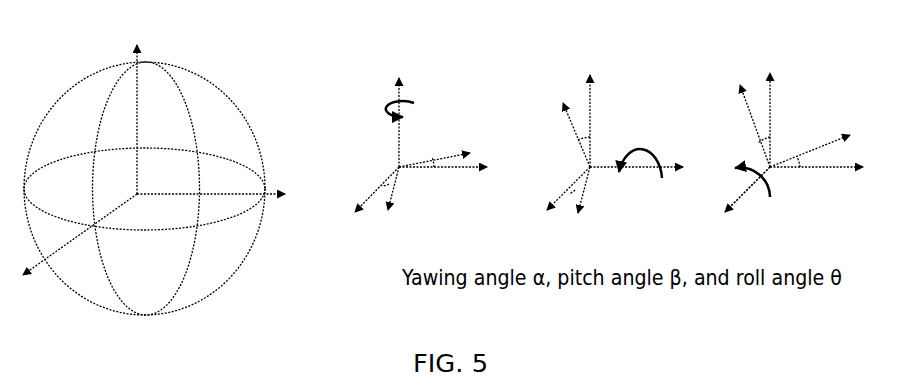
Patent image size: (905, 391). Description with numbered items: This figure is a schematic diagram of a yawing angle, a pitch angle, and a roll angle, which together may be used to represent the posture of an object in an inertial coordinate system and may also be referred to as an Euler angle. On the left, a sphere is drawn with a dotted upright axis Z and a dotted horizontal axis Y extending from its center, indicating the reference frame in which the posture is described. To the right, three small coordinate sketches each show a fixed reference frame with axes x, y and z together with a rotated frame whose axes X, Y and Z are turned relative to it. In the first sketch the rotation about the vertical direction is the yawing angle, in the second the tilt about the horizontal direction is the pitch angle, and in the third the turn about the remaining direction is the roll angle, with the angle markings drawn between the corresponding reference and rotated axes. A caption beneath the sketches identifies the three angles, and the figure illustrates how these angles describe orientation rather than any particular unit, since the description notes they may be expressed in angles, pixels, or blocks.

The Z axis (vertical / rotated) Z is at (449, 106).
The Y axis (rotated) Y is at (504, 172).
The X axis (rotated) X is at (579, 200).
The z axis (reference) z is at (595, 117).
The y axis (reference) y is at (631, 183).
The x axis (reference) x is at (555, 191).